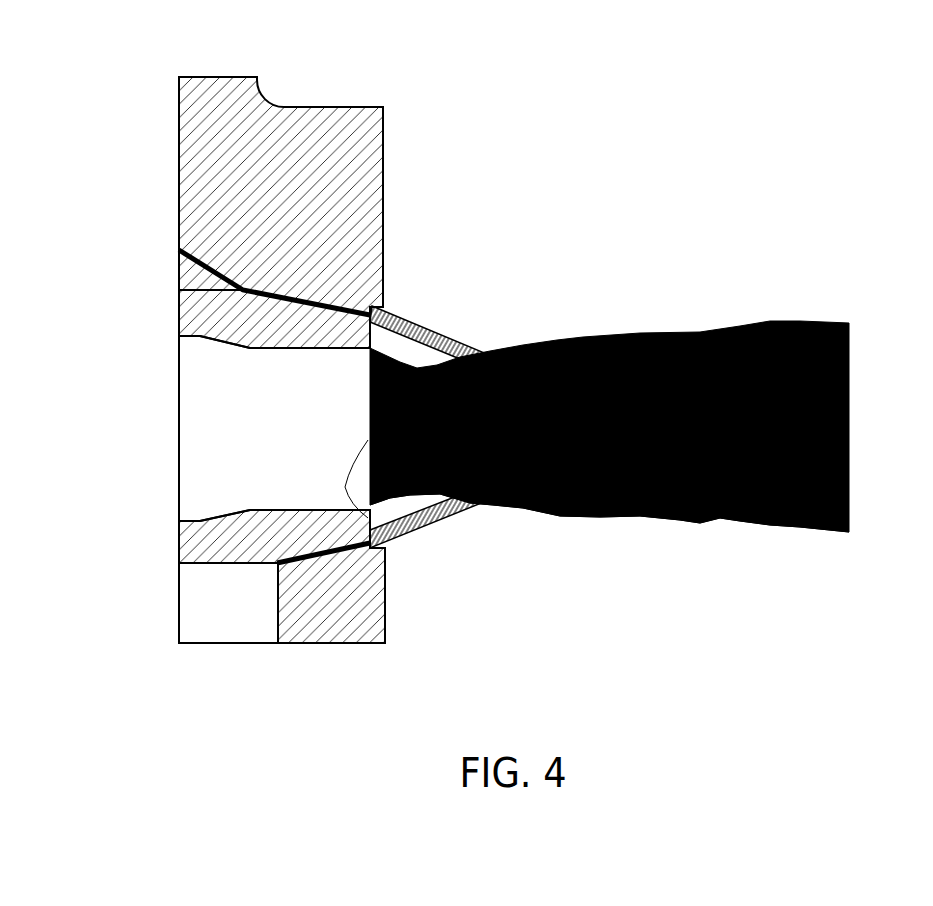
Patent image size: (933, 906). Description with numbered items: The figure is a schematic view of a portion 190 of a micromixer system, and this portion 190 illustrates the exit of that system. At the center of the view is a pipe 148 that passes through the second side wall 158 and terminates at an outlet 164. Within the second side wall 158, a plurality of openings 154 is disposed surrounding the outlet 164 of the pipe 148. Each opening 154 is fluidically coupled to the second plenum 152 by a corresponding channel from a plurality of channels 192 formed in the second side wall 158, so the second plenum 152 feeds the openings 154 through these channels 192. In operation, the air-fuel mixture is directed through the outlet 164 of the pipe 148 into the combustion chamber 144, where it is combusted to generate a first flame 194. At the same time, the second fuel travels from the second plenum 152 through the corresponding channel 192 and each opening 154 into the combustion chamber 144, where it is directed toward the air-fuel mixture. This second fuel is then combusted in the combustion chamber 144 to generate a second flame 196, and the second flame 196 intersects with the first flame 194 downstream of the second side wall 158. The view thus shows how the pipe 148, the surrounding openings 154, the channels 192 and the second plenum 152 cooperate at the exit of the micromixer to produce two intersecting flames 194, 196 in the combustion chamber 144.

The portion 190 is at (783, 86).
The second side wall 158 is at (186, 183).
The second plenum 152 is at (190, 275).
The pipe 148 is at (190, 450).
The channels 192 is at (300, 305).
The openings 154 is at (387, 309).
The second flame 196 is at (470, 343).
The outlet 164 is at (387, 542).
The first flame 194 is at (686, 331).
The combustion chamber 144 is at (743, 539).